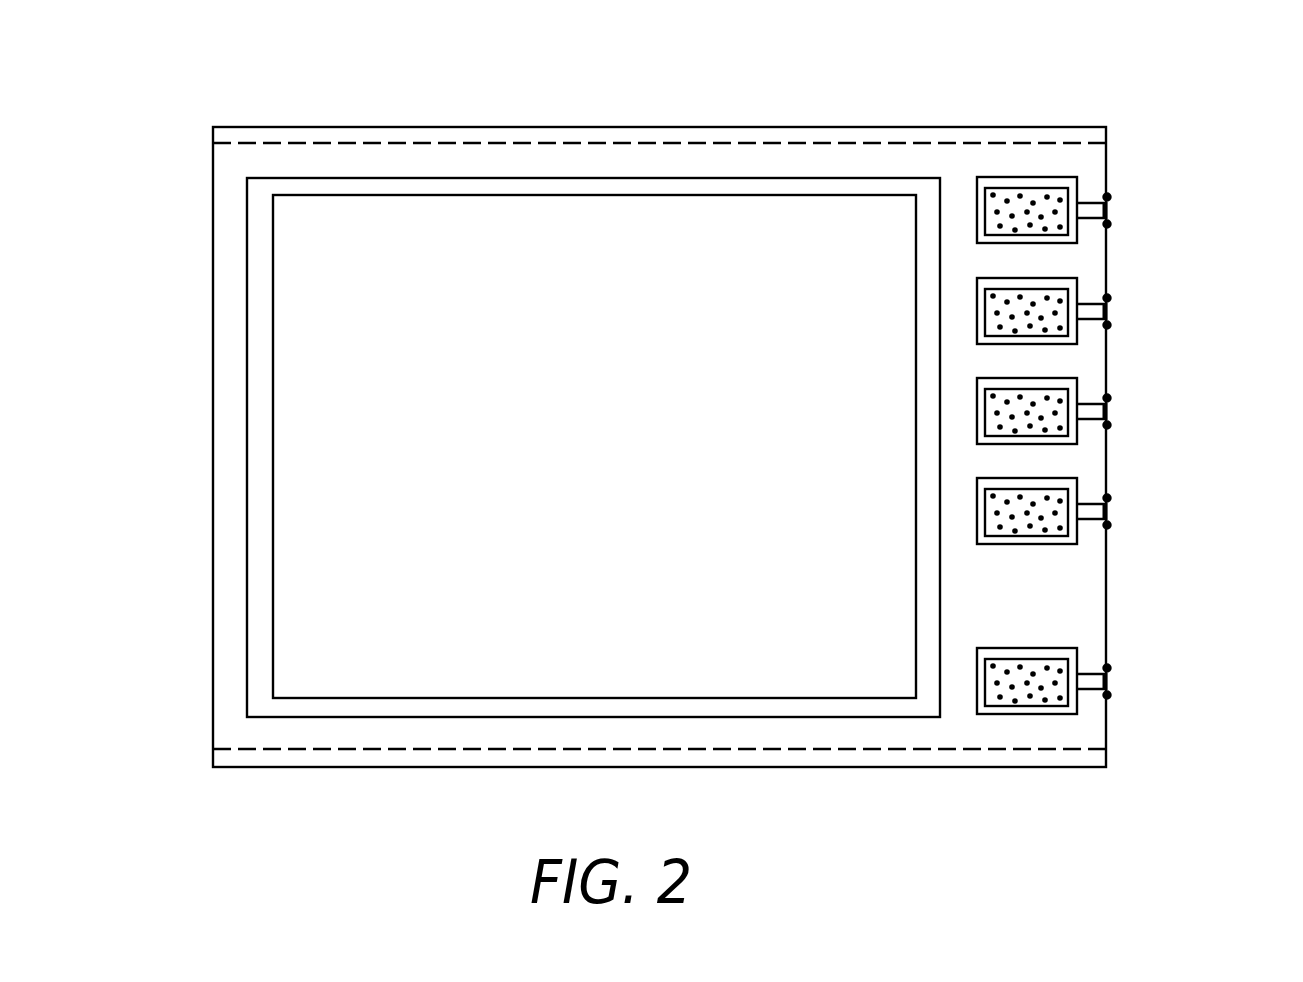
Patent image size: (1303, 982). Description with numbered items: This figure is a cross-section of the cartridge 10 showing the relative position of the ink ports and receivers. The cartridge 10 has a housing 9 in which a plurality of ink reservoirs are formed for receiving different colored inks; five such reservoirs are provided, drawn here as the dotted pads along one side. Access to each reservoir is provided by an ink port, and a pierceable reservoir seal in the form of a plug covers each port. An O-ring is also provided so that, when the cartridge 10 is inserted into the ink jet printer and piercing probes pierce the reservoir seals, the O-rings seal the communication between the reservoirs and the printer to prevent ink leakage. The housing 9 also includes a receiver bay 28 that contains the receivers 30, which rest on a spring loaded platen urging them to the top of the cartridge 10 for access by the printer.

The housing 9 is at (683, 127).
The cartridge 10 is at (143, 472).
The receiver bay 28 is at (248, 205).
The receivers 30 is at (397, 196).